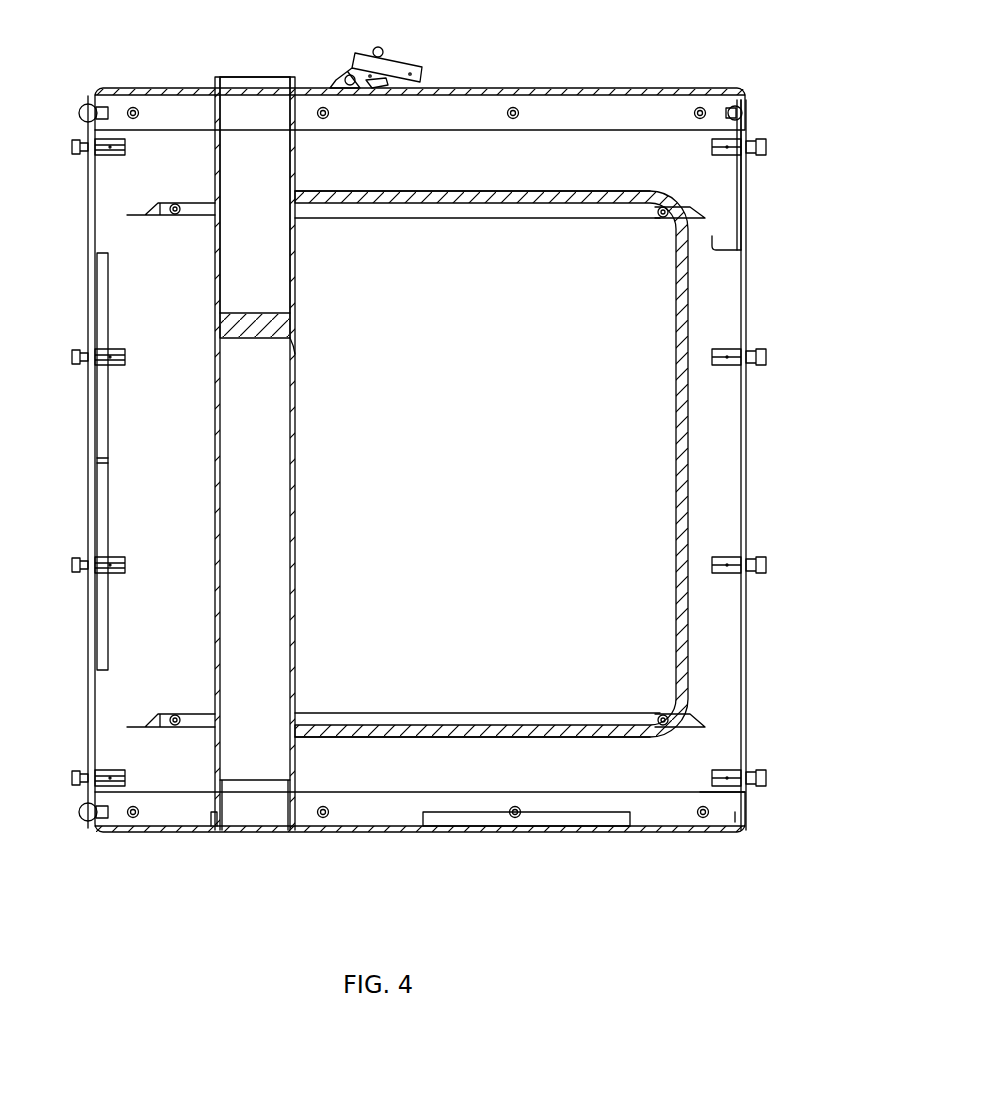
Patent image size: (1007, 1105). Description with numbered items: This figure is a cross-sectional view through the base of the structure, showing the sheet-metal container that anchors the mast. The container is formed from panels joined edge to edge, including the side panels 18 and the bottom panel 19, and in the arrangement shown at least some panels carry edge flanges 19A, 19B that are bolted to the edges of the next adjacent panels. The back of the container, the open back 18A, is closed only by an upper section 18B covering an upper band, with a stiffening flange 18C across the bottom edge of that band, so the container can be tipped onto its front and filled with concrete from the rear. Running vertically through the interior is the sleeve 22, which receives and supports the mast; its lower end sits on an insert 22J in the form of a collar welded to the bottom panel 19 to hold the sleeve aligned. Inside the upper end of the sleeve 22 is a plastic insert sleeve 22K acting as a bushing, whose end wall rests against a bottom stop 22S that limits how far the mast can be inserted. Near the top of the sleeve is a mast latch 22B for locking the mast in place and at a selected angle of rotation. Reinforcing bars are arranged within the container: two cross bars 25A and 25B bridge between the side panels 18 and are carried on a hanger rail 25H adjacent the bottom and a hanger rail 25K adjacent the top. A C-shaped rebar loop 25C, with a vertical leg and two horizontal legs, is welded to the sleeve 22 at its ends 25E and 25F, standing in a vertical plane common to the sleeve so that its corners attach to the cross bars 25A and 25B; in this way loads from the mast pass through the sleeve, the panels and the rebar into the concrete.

The side panels 18 is at (98, 462).
The open back 18A is at (752, 466).
The upper section 18B is at (750, 201).
The stiffening flange 18C is at (724, 258).
The bottom panel 19 is at (645, 833).
The edge flange 19A is at (735, 822).
The edge flange 19B is at (718, 95).
The sleeve 22 is at (296, 466).
The mast latch 22B is at (398, 58).
The insert 22J is at (222, 790).
The plastic insert sleeve 22K is at (268, 252).
The bottom stop 22S is at (297, 350).
The cross bar 25A is at (176, 716).
The cross bar 25B is at (176, 215).
The rebar loop 25C is at (672, 466).
The end 25E is at (300, 186).
The end 25F is at (300, 726).
The hanger rail 25H is at (490, 710).
The hanger rail 25K is at (502, 206).